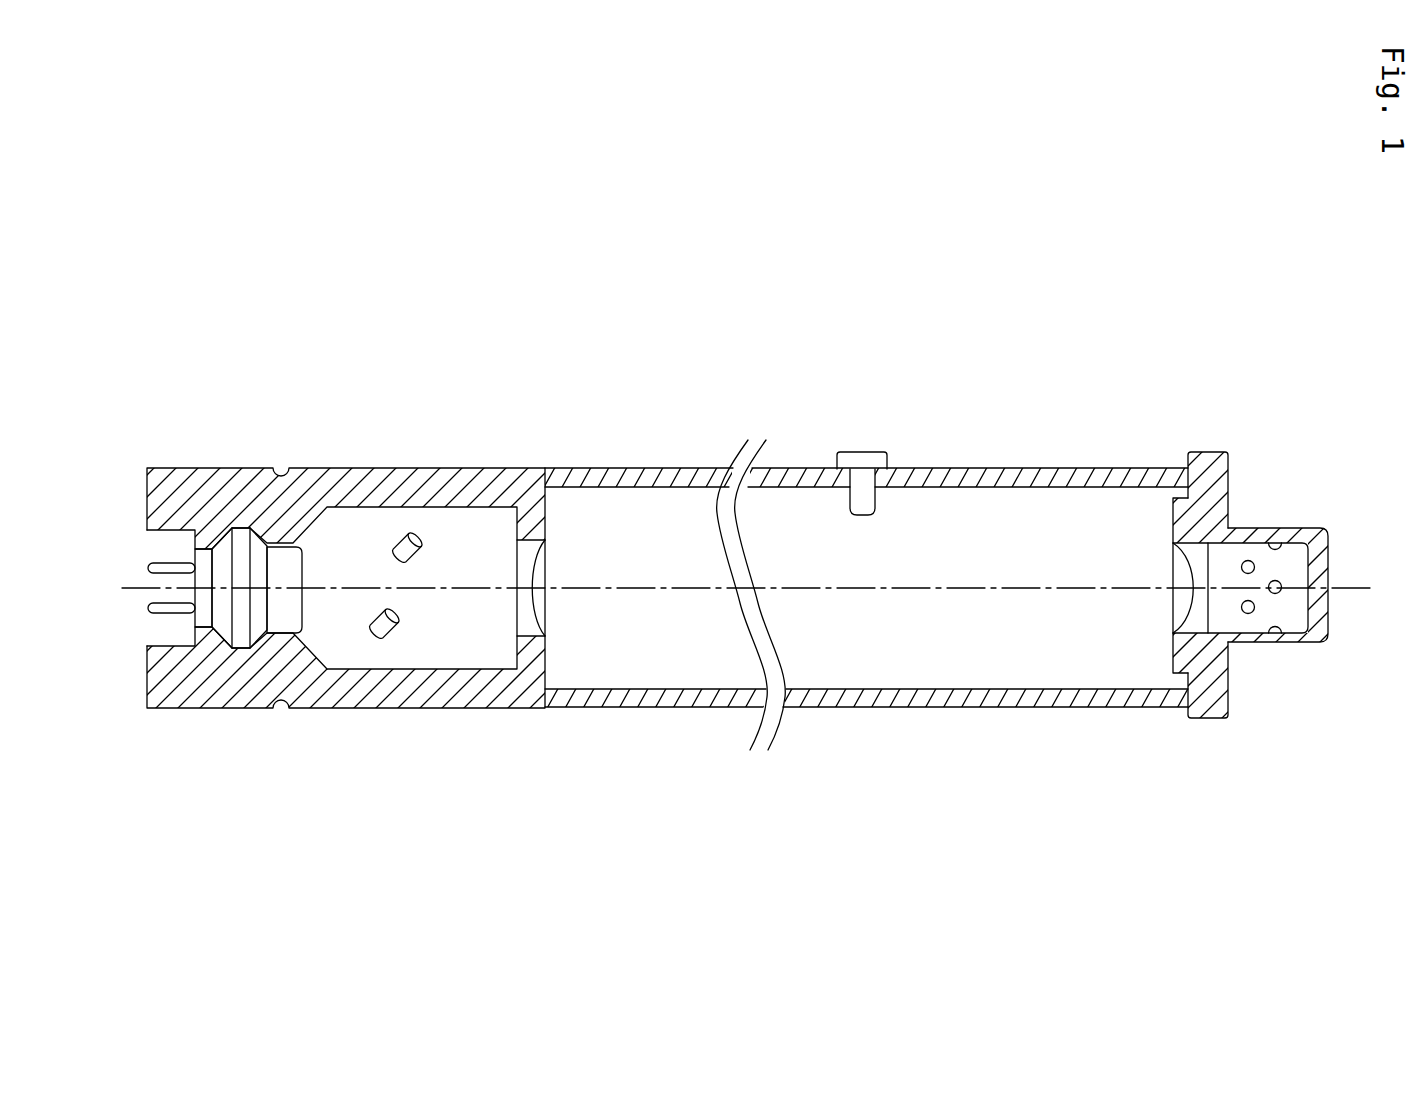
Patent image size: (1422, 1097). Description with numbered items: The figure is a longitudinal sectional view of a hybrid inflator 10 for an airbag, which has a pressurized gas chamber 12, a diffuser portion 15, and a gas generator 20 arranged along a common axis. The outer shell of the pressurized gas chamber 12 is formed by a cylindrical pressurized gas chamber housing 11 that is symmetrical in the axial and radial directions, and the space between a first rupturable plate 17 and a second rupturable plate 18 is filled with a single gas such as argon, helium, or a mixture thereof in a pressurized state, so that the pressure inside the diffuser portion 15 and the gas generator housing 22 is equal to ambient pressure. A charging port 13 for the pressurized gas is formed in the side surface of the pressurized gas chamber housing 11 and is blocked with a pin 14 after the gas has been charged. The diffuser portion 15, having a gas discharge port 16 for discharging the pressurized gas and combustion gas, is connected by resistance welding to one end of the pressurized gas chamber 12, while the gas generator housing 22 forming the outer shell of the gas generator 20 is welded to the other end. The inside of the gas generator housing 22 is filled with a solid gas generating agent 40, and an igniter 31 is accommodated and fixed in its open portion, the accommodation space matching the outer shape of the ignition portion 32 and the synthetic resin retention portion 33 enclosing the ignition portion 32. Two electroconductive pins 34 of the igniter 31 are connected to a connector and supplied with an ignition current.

The inflator 10 is at (717, 407).
The pressurized gas chamber housing 11 is at (1000, 467).
The pressurized gas chamber 12 is at (833, 643).
The charging port 13 is at (878, 502).
The pin 14 is at (863, 457).
The diffuser portion 15 is at (1217, 437).
The gas discharge port 16 is at (1248, 640).
The first rupturable plate 17 is at (523, 637).
The second rupturable plate 18 is at (1205, 718).
The gas generator 20 is at (287, 435).
The gas generator housing 22 is at (370, 468).
The igniter 31 is at (259, 690).
The ignition portion 32 is at (285, 625).
The retention portion 33 is at (238, 640).
The electroconductive pins 34 is at (150, 567).
The solid gas generating agent 40 is at (378, 630).